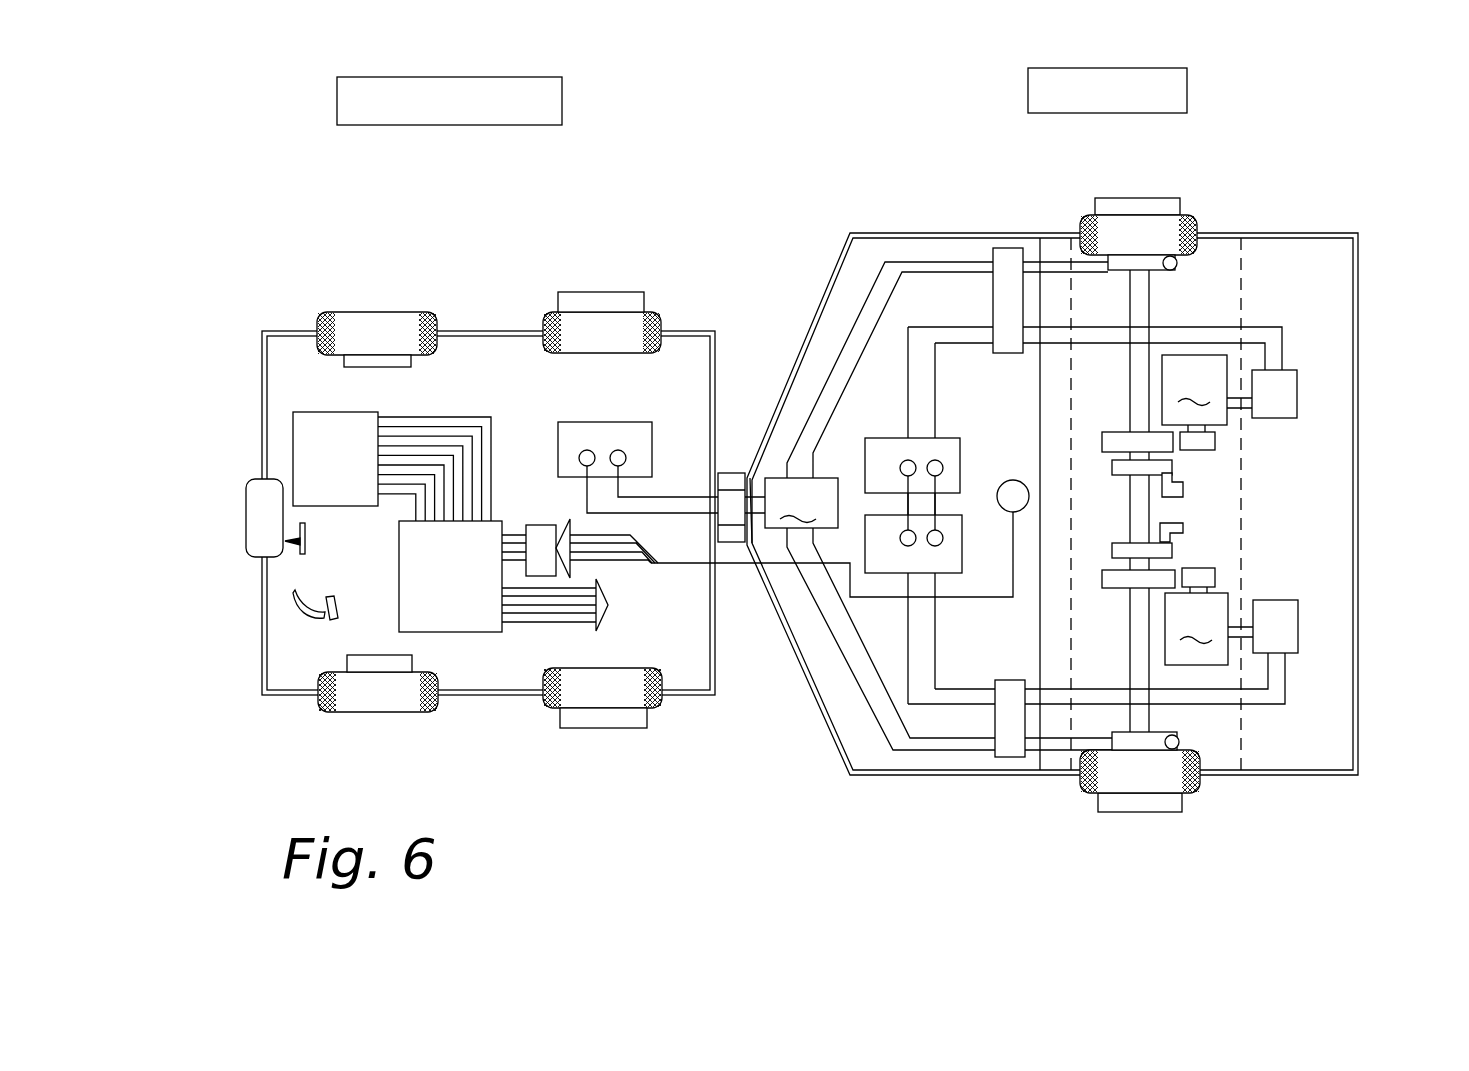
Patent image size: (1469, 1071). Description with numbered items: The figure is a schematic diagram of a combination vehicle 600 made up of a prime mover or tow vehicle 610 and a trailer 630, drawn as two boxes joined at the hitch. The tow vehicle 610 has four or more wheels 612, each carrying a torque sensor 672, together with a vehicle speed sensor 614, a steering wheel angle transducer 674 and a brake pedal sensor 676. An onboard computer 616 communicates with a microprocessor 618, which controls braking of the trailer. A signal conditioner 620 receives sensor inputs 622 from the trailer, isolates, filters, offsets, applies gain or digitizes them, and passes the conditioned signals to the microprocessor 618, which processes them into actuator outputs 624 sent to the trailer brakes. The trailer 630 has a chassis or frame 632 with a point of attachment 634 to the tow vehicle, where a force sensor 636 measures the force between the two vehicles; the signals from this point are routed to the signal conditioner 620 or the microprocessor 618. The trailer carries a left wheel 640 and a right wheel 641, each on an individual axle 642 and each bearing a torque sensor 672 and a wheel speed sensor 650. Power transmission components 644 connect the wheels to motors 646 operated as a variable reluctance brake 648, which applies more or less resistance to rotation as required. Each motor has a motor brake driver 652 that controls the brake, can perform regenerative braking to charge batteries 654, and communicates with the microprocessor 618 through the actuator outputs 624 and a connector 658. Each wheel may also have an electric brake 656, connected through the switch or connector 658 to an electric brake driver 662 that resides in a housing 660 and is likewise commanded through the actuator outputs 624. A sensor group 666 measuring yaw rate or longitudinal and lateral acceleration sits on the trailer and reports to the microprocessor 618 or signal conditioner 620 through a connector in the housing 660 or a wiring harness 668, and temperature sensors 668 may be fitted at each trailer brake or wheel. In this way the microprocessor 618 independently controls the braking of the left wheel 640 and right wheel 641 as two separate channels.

The combination vehicle 600 is at (1270, 160).
The tow vehicle 610 is at (330, 225).
The wheels 612 is at (385, 312).
The vehicle speed sensor 614 is at (250, 479).
The onboard computer 616 is at (340, 412).
The microprocessor 618 is at (447, 600).
The signal conditioner 620 is at (555, 494).
The sensor inputs 622 is at (626, 565).
The actuator outputs 624 is at (580, 620).
The trailer 630 is at (1358, 208).
The trailer chassis or frame 632 is at (791, 623).
The point of attachment 634 is at (754, 478).
The force sensor 636 is at (733, 473).
The left wheel 640 is at (1182, 799).
The right wheel 641 is at (1162, 198).
The individual axles 642 is at (1149, 308).
The power transmission components 644 is at (1103, 580).
The motors 646 is at (1220, 358).
The variable reluctance brake 648 is at (1195, 510).
The wheel speed sensor 650 is at (1183, 530).
The motor brake driver 652 is at (1280, 418).
The batteries 654 is at (962, 563).
The electric brake 656 is at (1178, 263).
The connector 658 is at (1005, 248).
The housing 660 is at (853, 472).
The electric brake driver 662 is at (801, 503).
The sensor group 666 is at (1013, 480).
The wiring harness 668 is at (1063, 270).
The torque sensor 672 is at (302, 312).
The steering wheel angle transducer 674 is at (307, 536).
The brake pedal sensor 676 is at (314, 600).